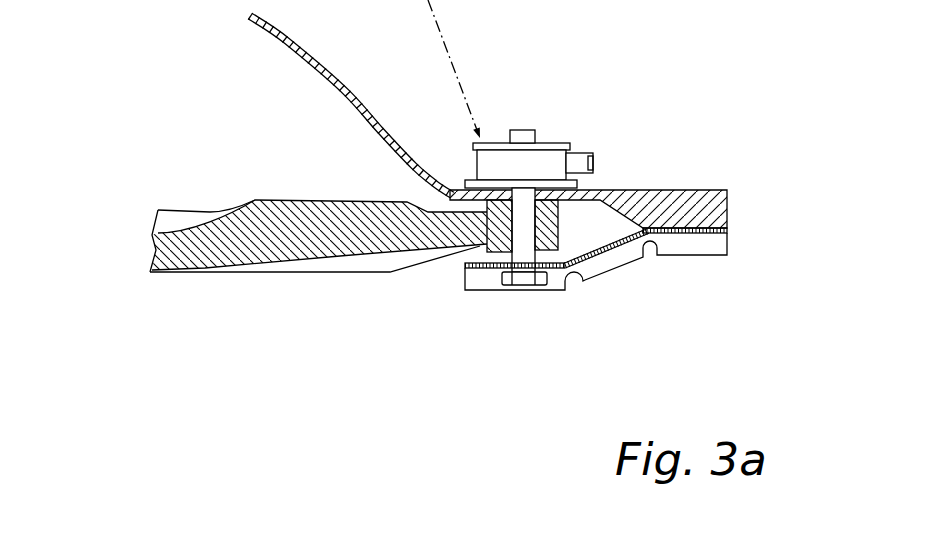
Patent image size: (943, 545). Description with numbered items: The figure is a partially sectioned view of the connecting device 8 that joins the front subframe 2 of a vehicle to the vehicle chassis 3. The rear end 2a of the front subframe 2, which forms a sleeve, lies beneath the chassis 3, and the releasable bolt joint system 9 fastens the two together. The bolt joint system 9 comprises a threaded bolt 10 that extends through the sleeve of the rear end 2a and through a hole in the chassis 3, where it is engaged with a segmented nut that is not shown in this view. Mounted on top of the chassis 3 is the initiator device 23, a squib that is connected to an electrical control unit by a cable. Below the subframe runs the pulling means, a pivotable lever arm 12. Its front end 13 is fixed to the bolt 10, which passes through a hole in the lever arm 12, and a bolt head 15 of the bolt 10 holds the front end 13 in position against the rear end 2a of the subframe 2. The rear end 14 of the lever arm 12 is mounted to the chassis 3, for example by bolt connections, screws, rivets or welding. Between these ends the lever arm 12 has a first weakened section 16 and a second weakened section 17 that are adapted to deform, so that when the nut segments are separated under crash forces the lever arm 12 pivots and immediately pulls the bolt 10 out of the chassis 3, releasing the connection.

The front subframe 2 is at (308, 216).
The rear end of the front subframe 2a is at (563, 228).
The vehicle chassis 3 is at (705, 190).
The connecting device 8 is at (720, 344).
The bolt joint system 9 is at (558, 114).
The threaded bolt 10 is at (492, 244).
The pivotable lever arm 12 is at (607, 266).
The front end of the lever arm 13 is at (476, 280).
The rear end of the lever arm 14 is at (713, 246).
The bolt head 15 is at (520, 290).
The first weakened section 16 is at (653, 236).
The second weakened section 17 is at (583, 282).
The initiator device 23 is at (593, 172).